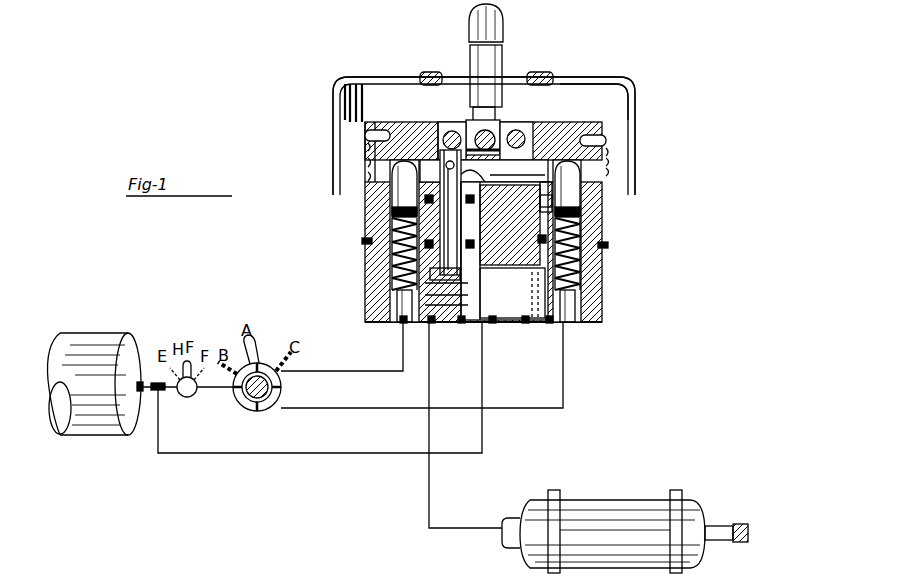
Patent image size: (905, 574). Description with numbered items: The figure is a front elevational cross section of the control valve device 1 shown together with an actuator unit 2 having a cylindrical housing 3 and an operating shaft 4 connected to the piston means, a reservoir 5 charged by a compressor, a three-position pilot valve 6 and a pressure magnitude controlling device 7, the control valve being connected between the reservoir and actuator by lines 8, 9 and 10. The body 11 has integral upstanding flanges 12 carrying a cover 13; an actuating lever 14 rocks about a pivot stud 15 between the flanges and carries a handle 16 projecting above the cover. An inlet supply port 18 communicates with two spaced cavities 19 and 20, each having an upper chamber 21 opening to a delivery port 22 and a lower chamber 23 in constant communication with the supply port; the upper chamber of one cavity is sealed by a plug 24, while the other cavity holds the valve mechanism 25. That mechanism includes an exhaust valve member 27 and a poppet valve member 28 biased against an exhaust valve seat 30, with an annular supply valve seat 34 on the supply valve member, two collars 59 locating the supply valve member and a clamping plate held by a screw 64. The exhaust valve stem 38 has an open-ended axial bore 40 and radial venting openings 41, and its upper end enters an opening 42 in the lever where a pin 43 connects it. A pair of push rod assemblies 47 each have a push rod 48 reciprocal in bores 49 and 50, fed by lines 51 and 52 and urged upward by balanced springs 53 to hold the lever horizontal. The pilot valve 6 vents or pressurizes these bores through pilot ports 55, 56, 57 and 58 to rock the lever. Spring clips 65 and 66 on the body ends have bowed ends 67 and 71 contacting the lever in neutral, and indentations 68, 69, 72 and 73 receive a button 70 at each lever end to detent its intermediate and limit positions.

The control valve device 1 is at (634, 72).
The actuator unit 2 is at (595, 493).
The cylindrical housing 3 is at (520, 555).
The operating shaft 4 is at (712, 543).
The reservoir 5 is at (98, 432).
The three-position pilot valve 6 is at (254, 412).
The pressure magnitude controlling device 7 is at (183, 397).
The line 8 is at (148, 392).
The line 9 is at (390, 455).
The line 10 is at (431, 484).
The body 11 is at (604, 312).
The upstanding flanges 12 is at (584, 84).
The cover 13 is at (371, 80).
The actuating lever 14 is at (362, 124).
The pivot stud 15 is at (492, 130).
The handle 16 is at (500, 20).
The inlet supply port 18 is at (462, 322).
The cavity 19 is at (406, 322).
The cavity 20 is at (524, 322).
The upper chamber 21 is at (552, 190).
The delivery port 22 is at (431, 322).
The lower chamber 23 is at (491, 322).
The plug 24 is at (535, 168).
The valve mechanism 25 is at (470, 218).
The exhaust valve member 27 is at (440, 126).
The valve member 28 is at (466, 290).
The exhaust valve seat 30 is at (470, 283).
The annular supply valve seat 34 is at (394, 269).
The exhaust valve stem 38 is at (478, 172).
The axial bore 40 is at (443, 152).
The radial venting openings 41 is at (443, 165).
The opening 42 is at (456, 132).
The pin 43 is at (447, 130).
The push rod assemblies 47 is at (394, 228).
The push rod 48 is at (394, 196).
The bore 49 is at (400, 306).
The bore 50 is at (572, 300).
The line 51 is at (383, 373).
The line 52 is at (383, 408).
The spring 53 is at (394, 286).
The pilot valve port 55 is at (272, 390).
The pilot port 56 is at (240, 396).
The pilot port 57 is at (267, 410).
The pilot port 58 is at (272, 376).
The collars 59 is at (478, 252).
The screw 64 is at (478, 182).
The spring clip 65 is at (364, 243).
The spring clip 66 is at (606, 247).
The outwardly bowed end 67 is at (358, 150).
The indentation 68 is at (362, 165).
The indentation 69 is at (366, 178).
The button 70 is at (358, 134).
The bowed end 71 is at (610, 152).
The indentation 72 is at (610, 160).
The indentation 73 is at (612, 170).